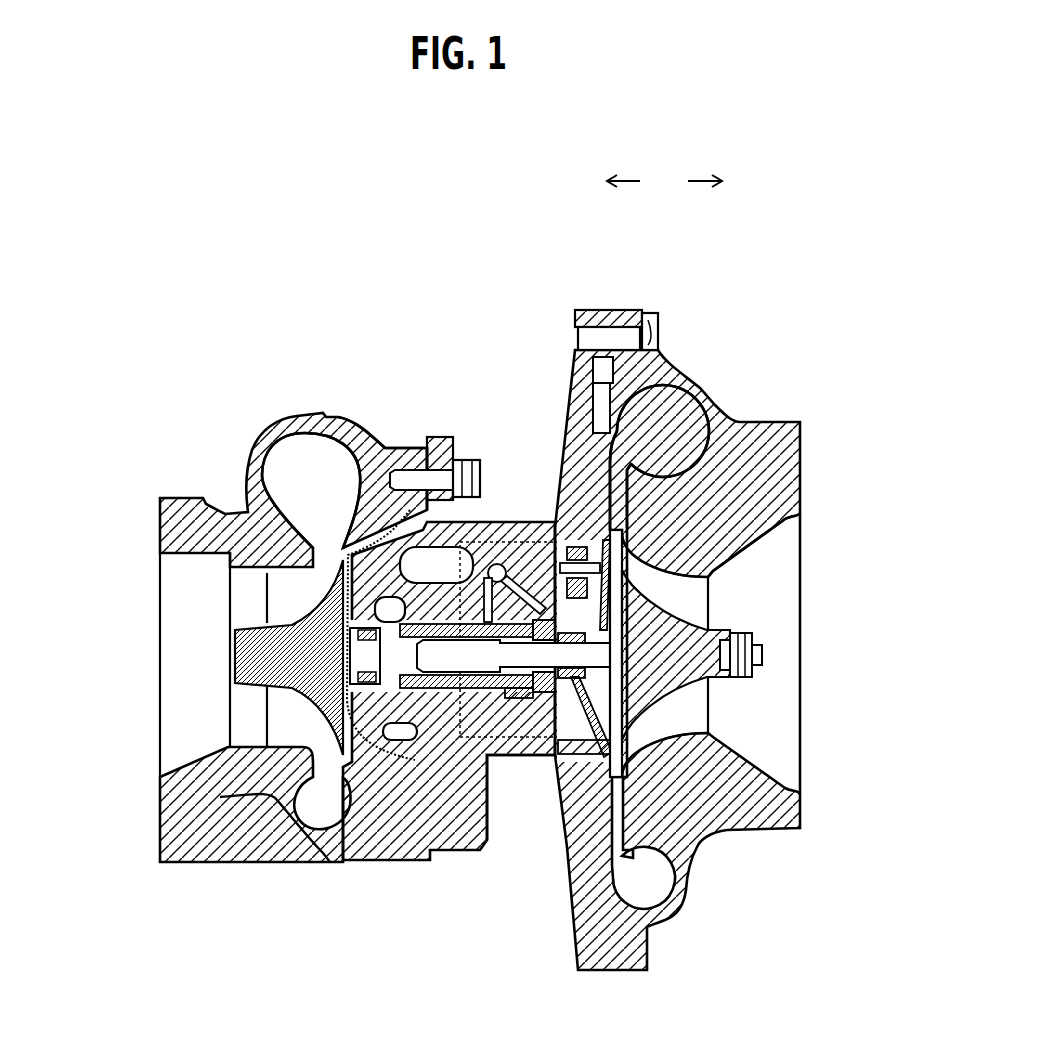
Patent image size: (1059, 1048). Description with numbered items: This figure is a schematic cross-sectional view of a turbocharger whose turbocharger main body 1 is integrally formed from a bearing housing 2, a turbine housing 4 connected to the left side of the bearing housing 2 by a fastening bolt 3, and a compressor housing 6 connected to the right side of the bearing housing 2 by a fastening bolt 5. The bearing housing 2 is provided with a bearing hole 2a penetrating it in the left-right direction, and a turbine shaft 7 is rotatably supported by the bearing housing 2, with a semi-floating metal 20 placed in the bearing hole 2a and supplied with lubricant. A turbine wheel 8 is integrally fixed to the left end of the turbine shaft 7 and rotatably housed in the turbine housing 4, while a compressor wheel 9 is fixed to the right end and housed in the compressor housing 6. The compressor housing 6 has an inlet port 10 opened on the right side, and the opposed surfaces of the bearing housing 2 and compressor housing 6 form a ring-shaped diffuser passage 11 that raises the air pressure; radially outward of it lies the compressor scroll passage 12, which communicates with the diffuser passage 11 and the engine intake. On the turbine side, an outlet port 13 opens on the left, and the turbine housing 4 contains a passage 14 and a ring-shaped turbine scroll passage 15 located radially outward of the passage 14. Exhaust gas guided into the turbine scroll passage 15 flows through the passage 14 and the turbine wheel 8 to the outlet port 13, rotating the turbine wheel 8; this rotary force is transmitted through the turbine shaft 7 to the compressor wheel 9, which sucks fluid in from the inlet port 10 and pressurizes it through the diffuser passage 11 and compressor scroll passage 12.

The turbocharger main body 1 is at (227, 327).
The bearing housing 2 is at (528, 521).
The bearing hole 2a is at (537, 760).
The fastening bolt 3 is at (466, 458).
The turbine housing 4 is at (370, 437).
The fastening bolt 5 is at (648, 348).
The compressor housing 6 is at (770, 420).
The turbine shaft 7 is at (472, 672).
The turbine wheel 8 is at (268, 690).
The compressor wheel 9 is at (712, 598).
The inlet port 10 is at (762, 541).
The diffuser passage 11 is at (647, 462).
The compressor scroll passage 12 is at (682, 397).
The outlet port 13 is at (158, 540).
The passage 14 is at (332, 530).
The turbine scroll passage 15 is at (308, 436).
The semi-floating metal 20 is at (517, 690).